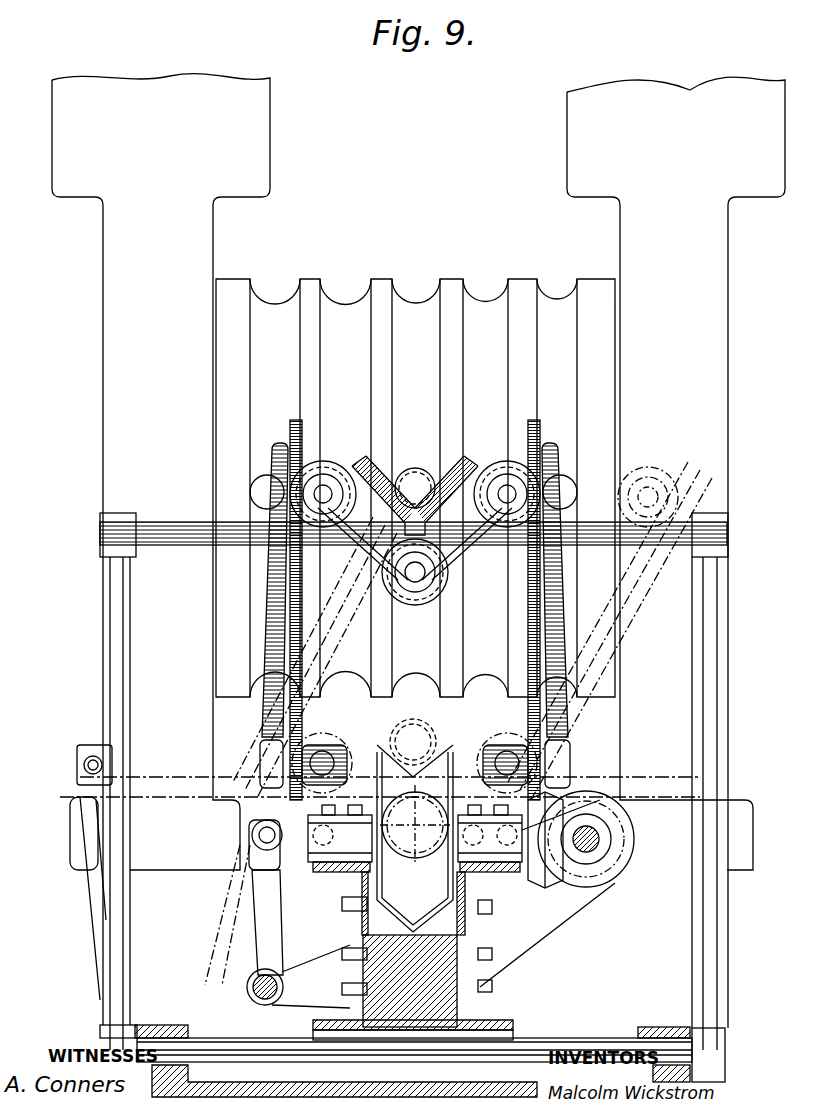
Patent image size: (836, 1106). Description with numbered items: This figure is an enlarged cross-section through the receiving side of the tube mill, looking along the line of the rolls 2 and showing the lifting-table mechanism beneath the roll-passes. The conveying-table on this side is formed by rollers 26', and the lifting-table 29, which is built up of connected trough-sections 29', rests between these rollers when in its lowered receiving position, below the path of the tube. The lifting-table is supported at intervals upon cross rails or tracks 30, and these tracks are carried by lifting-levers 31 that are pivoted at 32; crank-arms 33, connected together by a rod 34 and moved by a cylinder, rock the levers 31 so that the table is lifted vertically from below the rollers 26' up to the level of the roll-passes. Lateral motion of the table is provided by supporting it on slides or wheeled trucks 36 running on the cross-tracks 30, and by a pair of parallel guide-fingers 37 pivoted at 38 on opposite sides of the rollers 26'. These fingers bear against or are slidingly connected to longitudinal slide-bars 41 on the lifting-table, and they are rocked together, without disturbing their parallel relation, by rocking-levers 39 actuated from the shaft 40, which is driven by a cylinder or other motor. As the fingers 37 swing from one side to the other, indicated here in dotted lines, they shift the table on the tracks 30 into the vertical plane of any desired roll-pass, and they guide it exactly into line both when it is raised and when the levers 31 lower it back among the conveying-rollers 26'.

The rolls 2 is at (415, 488).
The lifting-table 29 is at (415, 471).
The trough-sections 29' is at (426, 482).
The longitudinal slide-bars 41 is at (326, 502).
The slides or wheeled trucks 36 is at (446, 574).
The guide-fingers 37 is at (276, 700).
The pivots of guide-fingers 38 is at (333, 757).
The conveying-table rollers on receiving side 26' is at (415, 879).
The cross rails or tracks 30 is at (640, 545).
The lifting-levers 31 is at (125, 740).
The pivot of lifting-levers 32 is at (692, 1062).
The crank-arms 33 is at (85, 832).
The rod 34 is at (84, 765).
The rocking-levers 39 is at (300, 893).
The shaft 40 is at (248, 989).